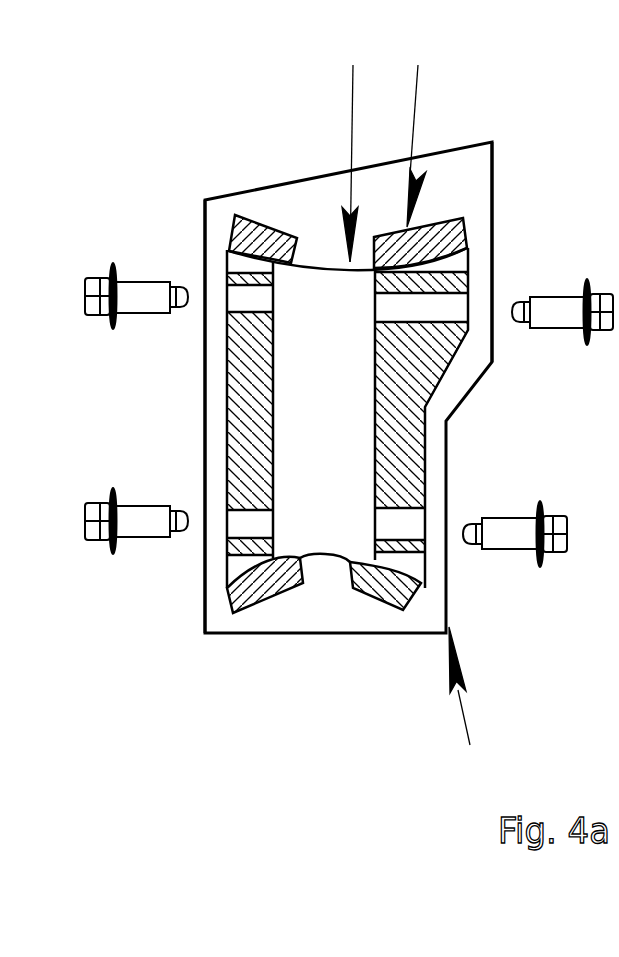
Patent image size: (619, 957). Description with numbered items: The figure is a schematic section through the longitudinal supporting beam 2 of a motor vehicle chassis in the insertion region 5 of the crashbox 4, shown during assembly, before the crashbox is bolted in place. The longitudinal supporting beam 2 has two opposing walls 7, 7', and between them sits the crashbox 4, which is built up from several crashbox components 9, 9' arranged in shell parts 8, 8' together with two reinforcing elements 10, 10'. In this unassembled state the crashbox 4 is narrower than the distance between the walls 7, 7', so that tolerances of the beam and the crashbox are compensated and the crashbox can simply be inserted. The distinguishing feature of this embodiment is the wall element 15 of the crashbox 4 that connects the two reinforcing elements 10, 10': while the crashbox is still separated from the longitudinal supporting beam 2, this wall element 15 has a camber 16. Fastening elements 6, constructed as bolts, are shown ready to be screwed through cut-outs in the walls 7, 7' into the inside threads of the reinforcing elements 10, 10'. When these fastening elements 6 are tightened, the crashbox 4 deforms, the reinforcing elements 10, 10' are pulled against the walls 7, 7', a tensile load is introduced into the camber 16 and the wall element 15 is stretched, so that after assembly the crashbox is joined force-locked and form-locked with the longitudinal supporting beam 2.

The longitudinal supporting beam 2 is at (323, 633).
The crashbox 4 is at (419, 126).
The insertion region 5 is at (465, 709).
The fastening elements 6 is at (102, 280).
The wall 7 is at (524, 262).
The wall 7' is at (149, 416).
The shell part 8 is at (465, 418).
The shell part 8' is at (183, 419).
The crashbox component 9 is at (385, 676).
The crashbox component 9' is at (260, 674).
The reinforcing element 10 is at (471, 412).
The reinforcing element 10' is at (176, 414).
The wall element 15 is at (312, 267).
The camber 16 is at (354, 143).